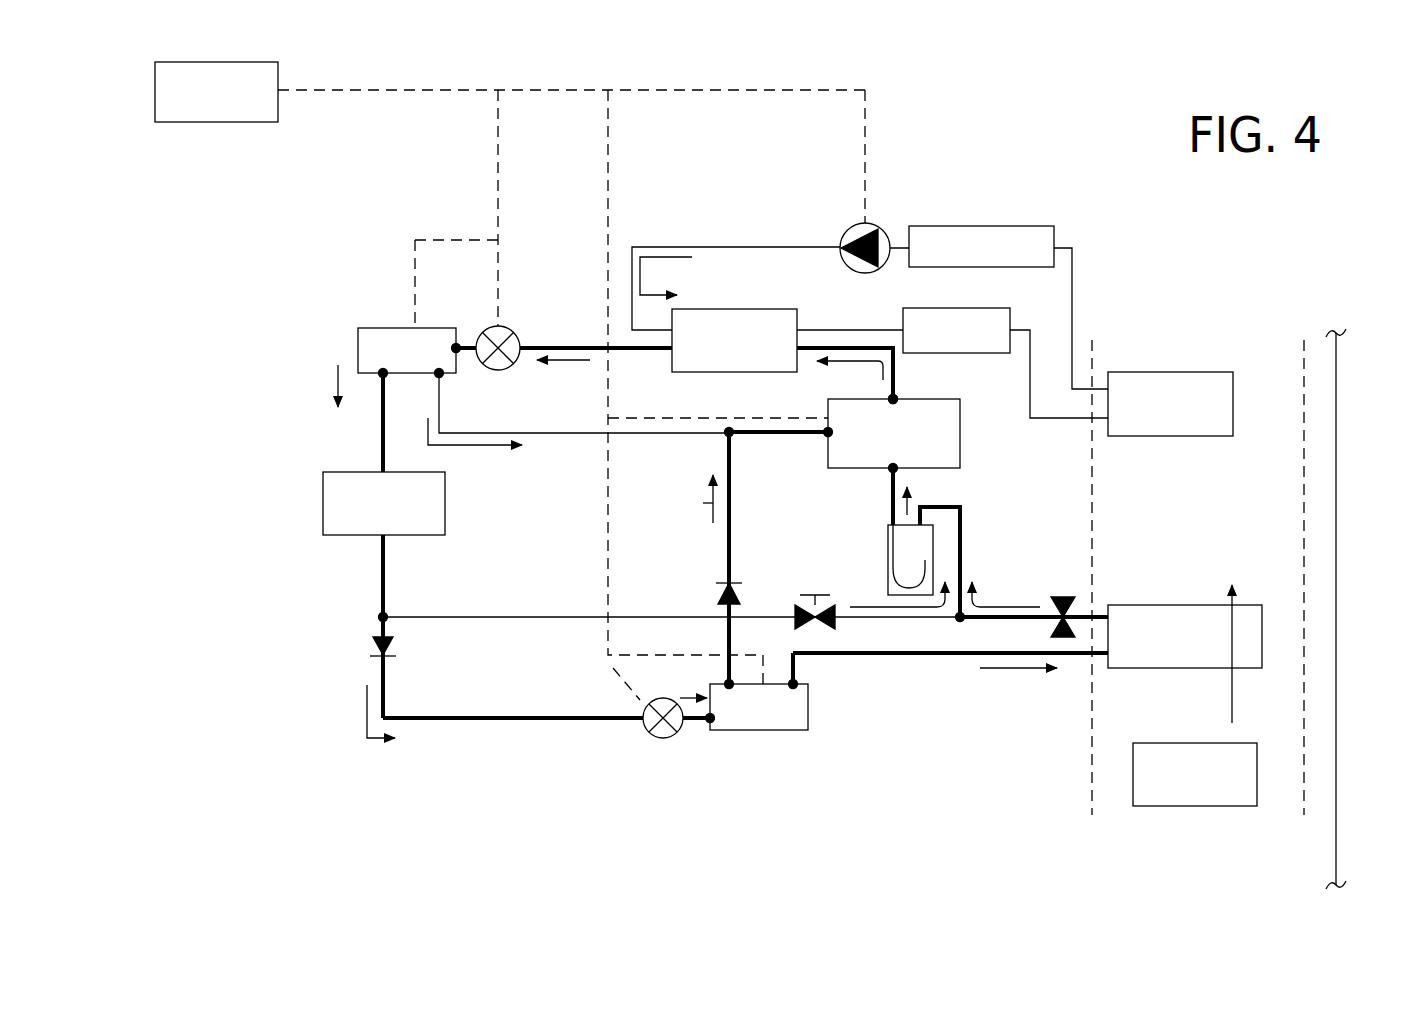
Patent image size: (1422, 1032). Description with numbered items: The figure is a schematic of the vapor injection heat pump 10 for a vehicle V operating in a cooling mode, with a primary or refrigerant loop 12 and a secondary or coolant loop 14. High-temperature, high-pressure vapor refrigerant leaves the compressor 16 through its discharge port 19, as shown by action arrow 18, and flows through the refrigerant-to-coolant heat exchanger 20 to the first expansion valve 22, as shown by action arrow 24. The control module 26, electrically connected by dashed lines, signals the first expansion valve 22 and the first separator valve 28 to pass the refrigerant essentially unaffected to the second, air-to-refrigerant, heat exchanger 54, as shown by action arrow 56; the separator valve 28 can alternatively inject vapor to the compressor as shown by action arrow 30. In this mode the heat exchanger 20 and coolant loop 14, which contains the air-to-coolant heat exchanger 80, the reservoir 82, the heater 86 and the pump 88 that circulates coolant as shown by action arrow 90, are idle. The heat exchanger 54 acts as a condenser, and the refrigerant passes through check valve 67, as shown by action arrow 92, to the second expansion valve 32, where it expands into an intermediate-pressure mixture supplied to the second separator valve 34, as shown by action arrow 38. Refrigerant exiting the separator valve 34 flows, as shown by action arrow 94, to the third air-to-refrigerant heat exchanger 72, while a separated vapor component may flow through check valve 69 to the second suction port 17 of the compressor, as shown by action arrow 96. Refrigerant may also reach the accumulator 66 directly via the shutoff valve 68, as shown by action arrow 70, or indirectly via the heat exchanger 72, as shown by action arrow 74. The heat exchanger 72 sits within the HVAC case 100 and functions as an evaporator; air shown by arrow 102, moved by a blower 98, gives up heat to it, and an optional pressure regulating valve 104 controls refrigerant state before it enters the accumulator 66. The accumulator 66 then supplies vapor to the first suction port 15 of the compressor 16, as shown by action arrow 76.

The vapor injection heat pump 10 is at (145, 340).
The primary loop 12 is at (433, 724).
The secondary loop 14 is at (784, 244).
The first suction port 15 is at (893, 470).
The compressor 16 is at (960, 448).
The second suction port 17 is at (828, 440).
The action arrow 18 is at (835, 363).
The discharge port 19 is at (896, 399).
The first refrigerant-to-coolant heat exchanger 20 is at (692, 372).
The first expansion valve 22 is at (518, 335).
The action arrow 24 is at (565, 362).
The control module 26 is at (190, 122).
The first separator valve 28 is at (358, 343).
The action arrow 30 is at (478, 445).
The second expansion valve 32 is at (652, 735).
The second separator valve 34 is at (787, 730).
The action arrow 38 is at (690, 698).
The second heat exchanger 54 is at (323, 503).
The action arrow 56 is at (335, 378).
The accumulator 66 is at (888, 562).
The check valve 67 is at (372, 645).
The shutoff valve 68 is at (793, 610).
The check valve 69 is at (716, 592).
The action arrow 70 is at (900, 607).
The third heat exchanger 72 is at (1198, 605).
The action arrow 74 is at (1005, 605).
The action arrow 76 is at (912, 498).
The fourth heat exchanger 80 is at (1175, 372).
The reservoir 82 is at (1018, 226).
The heater 86 is at (970, 308).
The pump 88 is at (878, 230).
The action arrow 90 is at (645, 277).
The action arrow 92 is at (360, 712).
The action arrow 94 is at (1012, 668).
The action arrow 96 is at (703, 503).
The blower 98 is at (1185, 806).
The HVAC case 100 is at (1302, 795).
The arrow 102 is at (1228, 690).
The pressure regulating valve 104 is at (1063, 597).
The vehicle V is at (1336, 482).